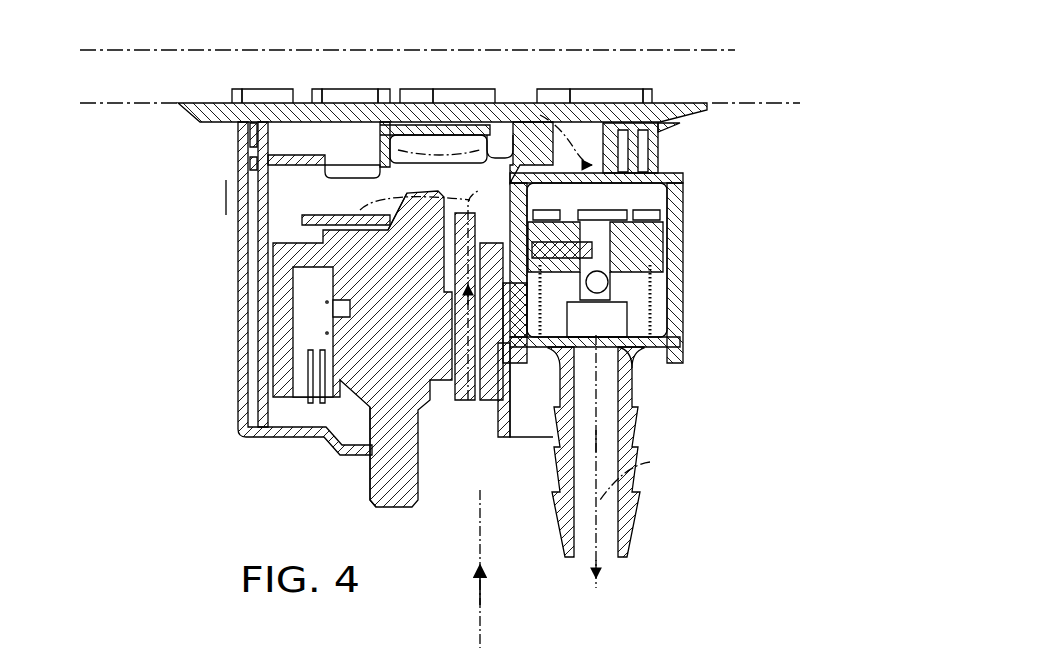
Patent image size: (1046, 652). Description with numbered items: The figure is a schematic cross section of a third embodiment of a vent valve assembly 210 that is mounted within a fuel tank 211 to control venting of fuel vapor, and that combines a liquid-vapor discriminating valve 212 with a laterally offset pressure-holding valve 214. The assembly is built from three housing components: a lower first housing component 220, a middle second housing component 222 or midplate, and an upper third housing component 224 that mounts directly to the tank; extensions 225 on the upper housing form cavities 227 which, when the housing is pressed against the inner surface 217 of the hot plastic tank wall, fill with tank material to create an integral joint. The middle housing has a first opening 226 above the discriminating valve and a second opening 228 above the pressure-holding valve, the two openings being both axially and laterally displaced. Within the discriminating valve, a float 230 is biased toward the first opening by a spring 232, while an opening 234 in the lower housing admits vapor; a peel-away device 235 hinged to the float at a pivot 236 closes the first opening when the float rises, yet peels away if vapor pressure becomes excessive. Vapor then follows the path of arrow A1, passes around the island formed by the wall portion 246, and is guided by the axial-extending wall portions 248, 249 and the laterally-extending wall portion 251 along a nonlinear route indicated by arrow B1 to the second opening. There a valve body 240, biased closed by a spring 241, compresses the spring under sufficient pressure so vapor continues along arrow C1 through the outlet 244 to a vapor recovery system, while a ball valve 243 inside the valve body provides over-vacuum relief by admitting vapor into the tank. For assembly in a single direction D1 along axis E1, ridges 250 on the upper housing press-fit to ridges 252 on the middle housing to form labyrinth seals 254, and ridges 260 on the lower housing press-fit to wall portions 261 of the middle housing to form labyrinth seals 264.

The vent valve assembly 210 is at (778, 82).
The fuel tank 211 is at (140, 48).
The liquid-vapor discriminating valve 212 is at (305, 458).
The pressure-holding valve 214 is at (706, 300).
The inner surface of upper wall of fuel tank 217 is at (785, 106).
The first housing component 220 is at (240, 352).
The second housing component 222 is at (680, 212).
The third housing component 224 is at (215, 121).
The extensions 225 is at (236, 96).
The first opening 226 is at (345, 165).
The cavities 227 is at (330, 94).
The second opening 228 is at (600, 205).
The float 230 is at (410, 358).
The spring 232 is at (418, 468).
The opening 234 is at (372, 455).
The peel-away device 235 is at (335, 214).
The pivot 236 is at (400, 215).
The valve body 240 is at (654, 258).
The spring 241 is at (655, 298).
The ball valve 243 is at (645, 365).
The vent valve assembly outlet 244 is at (628, 556).
The wall portion 246 is at (422, 132).
The axial-extending wall portion 248 is at (445, 130).
The axial-extending wall portion 249 is at (622, 145).
The ridges 250 is at (256, 140).
The laterally-extending wall portion 251 is at (520, 186).
The ridges 252 is at (256, 183).
The labyrinth seals 254 is at (218, 160).
The ridges 260 is at (515, 362).
The wall portions 261 is at (490, 303).
The labyrinth seals 264 is at (548, 352).
The vapor flow path arrow A1 is at (408, 206).
The vapor flow path arrow B1 is at (545, 110).
The vapor flow path arrow C1 is at (635, 461).
The assembly direction D1 is at (482, 590).
The assembly axis E1 is at (482, 540).